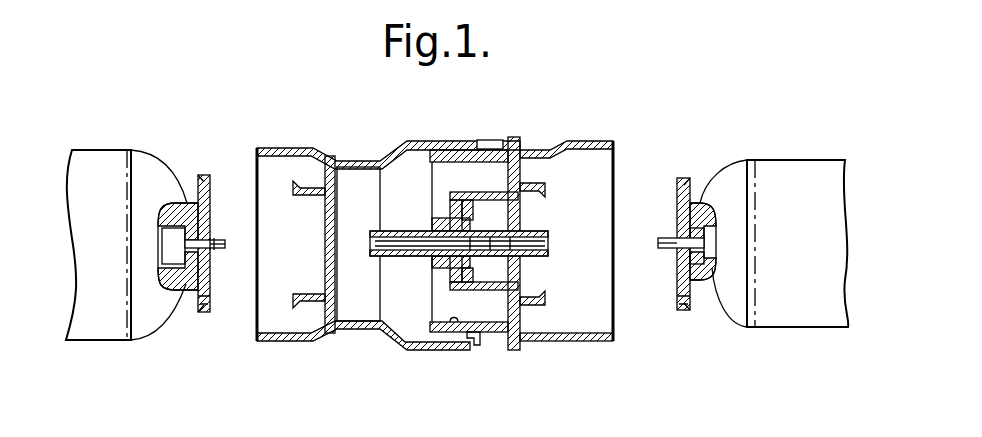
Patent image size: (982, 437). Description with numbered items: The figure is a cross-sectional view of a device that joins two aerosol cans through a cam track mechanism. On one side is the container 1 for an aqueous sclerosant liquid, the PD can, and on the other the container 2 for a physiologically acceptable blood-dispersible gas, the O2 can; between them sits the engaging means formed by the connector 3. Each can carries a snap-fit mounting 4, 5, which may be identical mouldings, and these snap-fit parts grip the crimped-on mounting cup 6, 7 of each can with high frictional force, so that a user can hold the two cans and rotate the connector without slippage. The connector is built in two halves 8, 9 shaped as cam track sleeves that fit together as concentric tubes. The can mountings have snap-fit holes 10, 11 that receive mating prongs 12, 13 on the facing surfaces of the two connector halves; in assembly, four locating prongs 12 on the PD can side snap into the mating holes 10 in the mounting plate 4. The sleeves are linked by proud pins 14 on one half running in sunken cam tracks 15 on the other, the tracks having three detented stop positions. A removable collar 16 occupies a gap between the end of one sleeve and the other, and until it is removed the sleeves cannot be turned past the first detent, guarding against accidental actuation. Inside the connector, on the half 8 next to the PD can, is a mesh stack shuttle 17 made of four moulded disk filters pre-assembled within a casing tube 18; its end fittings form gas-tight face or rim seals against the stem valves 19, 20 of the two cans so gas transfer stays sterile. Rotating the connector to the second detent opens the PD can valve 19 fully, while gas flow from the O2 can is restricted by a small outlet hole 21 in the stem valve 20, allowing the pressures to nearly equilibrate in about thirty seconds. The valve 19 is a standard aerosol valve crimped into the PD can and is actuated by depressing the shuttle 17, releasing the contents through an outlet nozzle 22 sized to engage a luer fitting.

The container for an aqueous sclerosant liquid 1 is at (776, 162).
The container for a physiologically acceptable blood-dispersible gas 2 is at (147, 160).
The connector 3 is at (405, 139).
The snap-fit mounting 4 is at (688, 178).
The snap-fit mounting 5 is at (203, 176).
The crimped-on mounting cup 6 is at (712, 273).
The crimped-on mounting cup 7 is at (170, 272).
The connector half 8 is at (568, 141).
The connector half 9 is at (320, 148).
The snap-fit holes 10 is at (696, 300).
The snap-fit holes 11 is at (196, 300).
The mating prongs 12 is at (545, 302).
The mating prongs 13 is at (308, 305).
The proud pins 14 is at (467, 333).
The sunken cam tracks 15 is at (455, 323).
The removable collar 16 is at (496, 139).
The mesh stack shuttle 17 is at (510, 230).
The casing tube 18 is at (500, 265).
The stem valve 19 is at (660, 243).
The stem valve 20 is at (223, 247).
The small outlet hole 21 is at (212, 238).
The outlet nozzle 22 is at (368, 243).